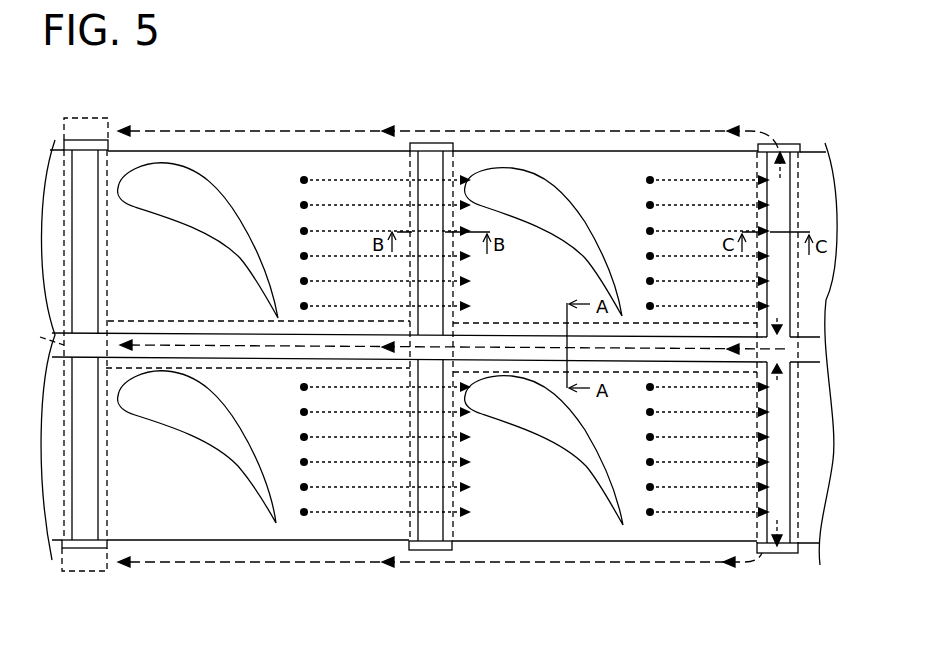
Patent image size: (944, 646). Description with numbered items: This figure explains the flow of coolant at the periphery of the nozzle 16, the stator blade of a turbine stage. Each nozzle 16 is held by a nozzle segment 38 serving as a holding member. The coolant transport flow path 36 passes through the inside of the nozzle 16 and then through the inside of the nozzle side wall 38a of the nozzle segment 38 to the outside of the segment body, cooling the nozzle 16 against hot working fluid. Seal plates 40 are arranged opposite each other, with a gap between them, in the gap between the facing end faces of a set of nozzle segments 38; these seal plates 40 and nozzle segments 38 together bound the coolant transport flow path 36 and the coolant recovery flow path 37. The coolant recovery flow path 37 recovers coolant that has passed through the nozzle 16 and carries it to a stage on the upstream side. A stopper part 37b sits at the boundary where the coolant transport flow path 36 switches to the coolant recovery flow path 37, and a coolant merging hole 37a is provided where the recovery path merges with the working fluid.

The nozzle 16 is at (178, 178).
The coolant transport flow path 36 is at (368, 178).
The coolant recovery flow path 37 is at (466, 132).
The coolant merging hole 37a is at (93, 118).
The stopper part 37b is at (795, 345).
The nozzle segment 38 is at (227, 160).
The nozzle side wall 38a is at (700, 530).
The seal plate 40 is at (432, 143).